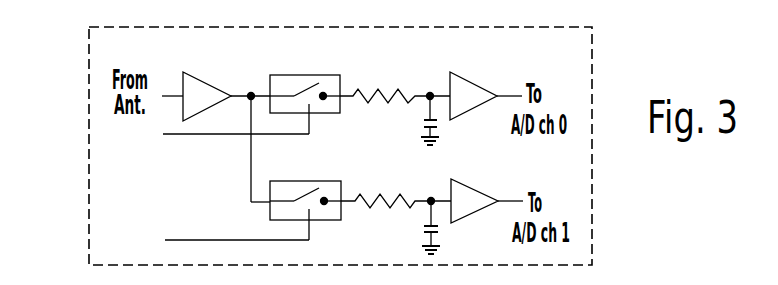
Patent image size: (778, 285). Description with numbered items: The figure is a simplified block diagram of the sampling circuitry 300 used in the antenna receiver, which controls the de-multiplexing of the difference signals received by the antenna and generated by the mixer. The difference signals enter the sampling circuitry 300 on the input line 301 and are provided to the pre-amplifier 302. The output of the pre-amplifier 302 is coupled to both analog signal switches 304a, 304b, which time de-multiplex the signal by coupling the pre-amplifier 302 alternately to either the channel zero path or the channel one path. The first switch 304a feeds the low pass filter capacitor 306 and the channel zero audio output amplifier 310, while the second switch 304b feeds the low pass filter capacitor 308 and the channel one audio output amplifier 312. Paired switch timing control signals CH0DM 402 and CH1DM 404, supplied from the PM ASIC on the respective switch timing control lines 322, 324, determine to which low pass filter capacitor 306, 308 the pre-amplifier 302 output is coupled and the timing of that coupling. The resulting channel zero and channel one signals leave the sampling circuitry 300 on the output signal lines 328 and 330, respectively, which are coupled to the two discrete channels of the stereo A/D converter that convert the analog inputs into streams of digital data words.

The sampling circuitry 300 is at (88, 82).
The input line 301 is at (172, 94).
The pre-amplifier 302 is at (203, 82).
The analog signal switch 304a is at (295, 74).
The analog signal switch 304b is at (295, 180).
The low pass filter capacitor 306 is at (422, 129).
The low pass filter capacitor 308 is at (420, 232).
The output amplifier 310 is at (473, 83).
The output amplifier 312 is at (485, 195).
The switch timing control line 322 is at (177, 135).
The switch timing control line 324 is at (177, 238).
The output signal line 328 is at (504, 93).
The output signal line 330 is at (511, 200).
The switch timing control signal CH0DM 402 is at (117, 152).
The switch timing control signal CH1DM 404 is at (132, 195).